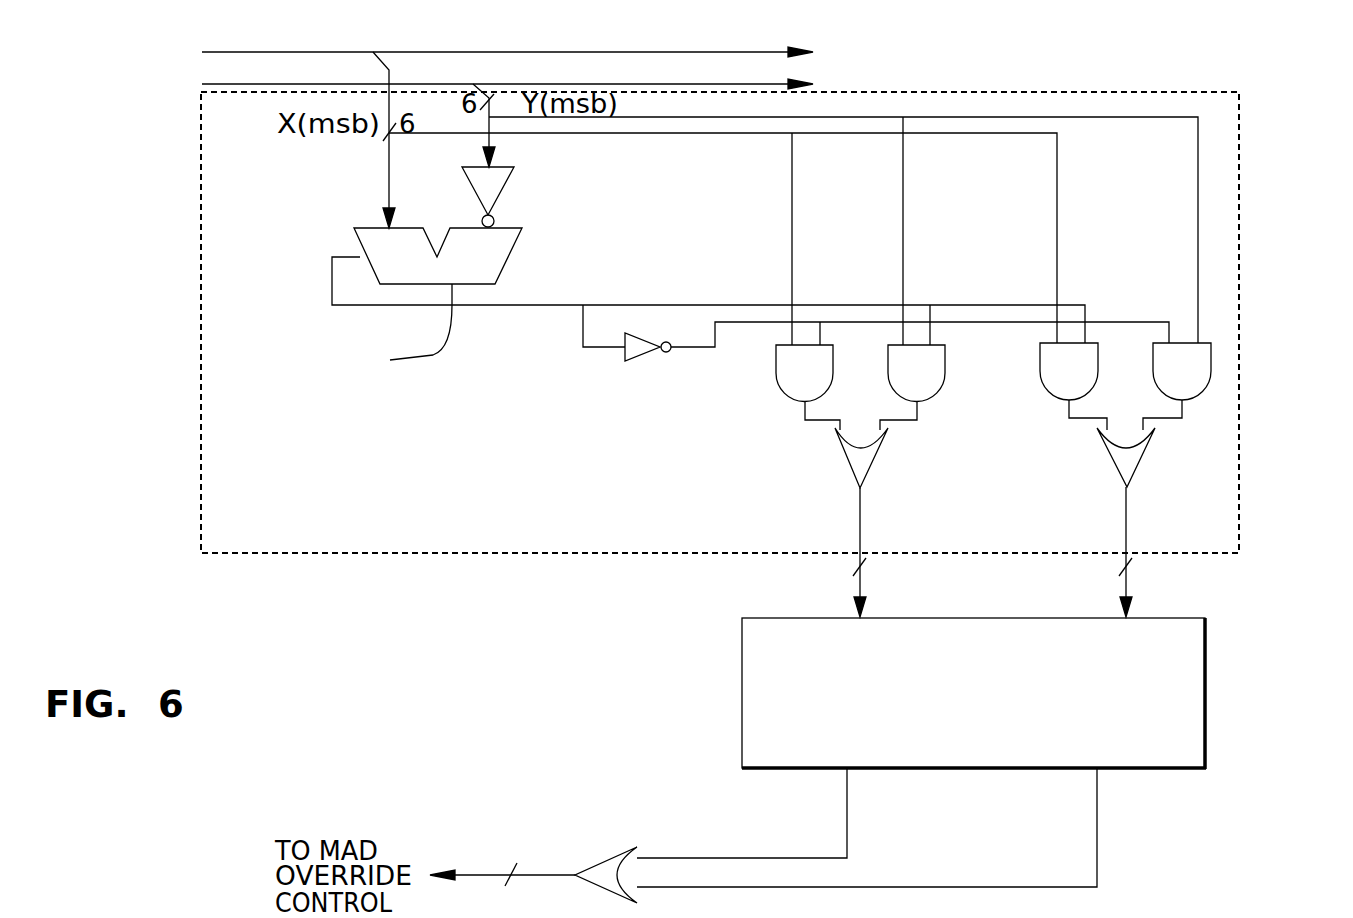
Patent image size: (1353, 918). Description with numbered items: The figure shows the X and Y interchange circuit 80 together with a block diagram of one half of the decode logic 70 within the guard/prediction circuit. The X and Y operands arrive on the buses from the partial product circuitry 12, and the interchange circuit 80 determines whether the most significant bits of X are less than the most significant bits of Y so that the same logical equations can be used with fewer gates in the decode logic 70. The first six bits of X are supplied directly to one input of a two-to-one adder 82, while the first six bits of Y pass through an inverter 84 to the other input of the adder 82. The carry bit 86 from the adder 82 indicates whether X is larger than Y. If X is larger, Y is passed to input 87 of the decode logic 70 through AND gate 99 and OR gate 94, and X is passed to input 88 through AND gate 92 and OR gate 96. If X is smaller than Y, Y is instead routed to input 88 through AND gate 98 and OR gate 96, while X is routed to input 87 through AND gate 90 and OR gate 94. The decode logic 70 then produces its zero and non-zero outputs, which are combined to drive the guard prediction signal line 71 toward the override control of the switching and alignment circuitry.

The circuitry 12 is at (518, 68).
The interchange circuit 80 is at (1240, 162).
The two-to-one adder 82 is at (497, 262).
The inverter 84 is at (493, 187).
The carry bit 86 is at (336, 306).
The AND gate 90 is at (782, 363).
The AND gate 99 is at (900, 378).
The AND gate 92 is at (1040, 365).
The AND gate 98 is at (1162, 368).
The OR gate 94 is at (847, 457).
The OR gate 96 is at (1110, 455).
The input 87 is at (857, 605).
The input 88 is at (1128, 600).
The decode logic 70 is at (742, 687).
The guard prediction signal lines 71 is at (517, 868).